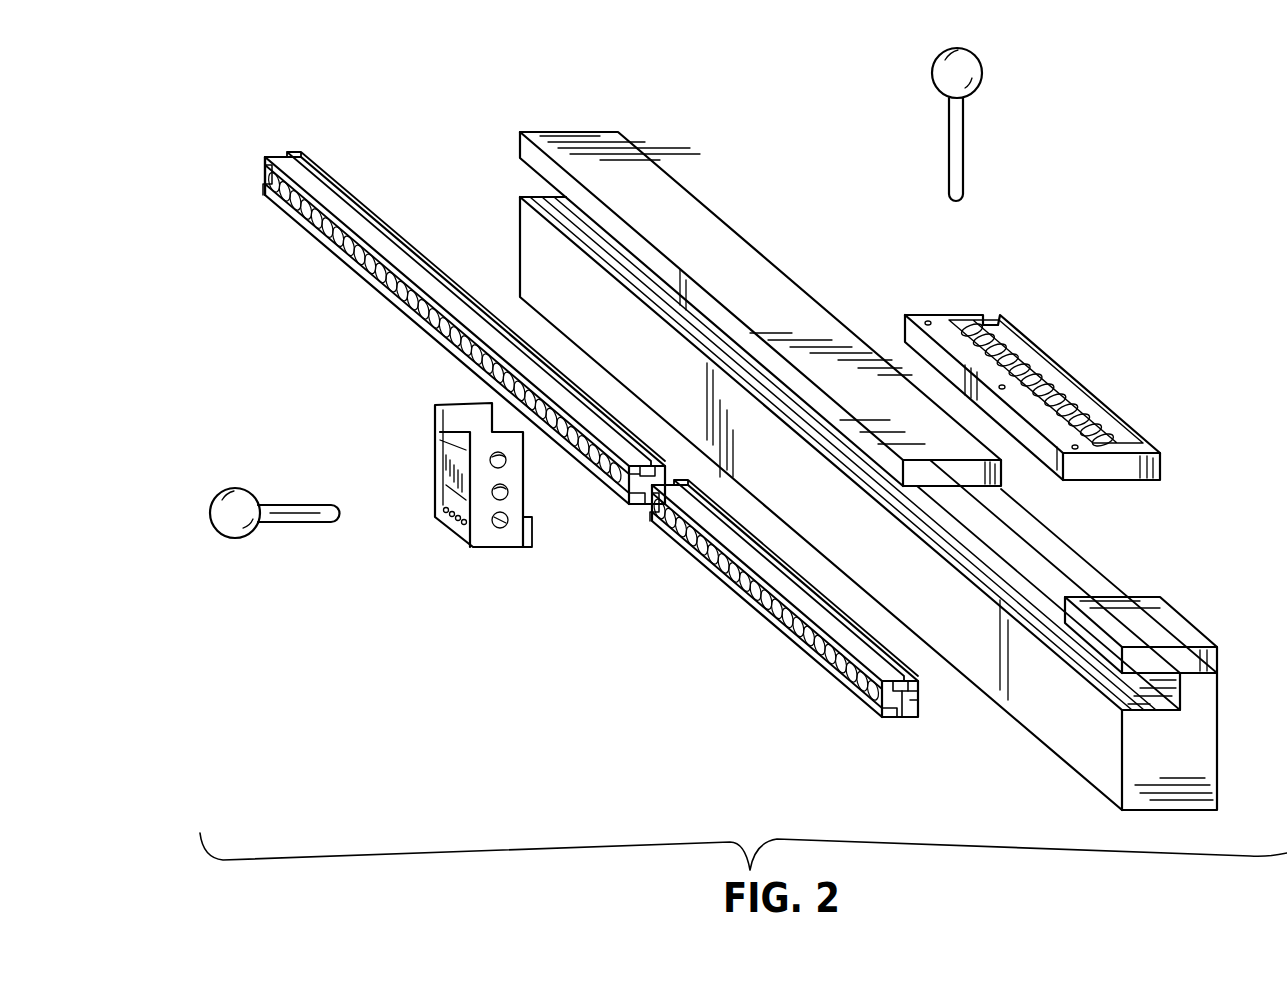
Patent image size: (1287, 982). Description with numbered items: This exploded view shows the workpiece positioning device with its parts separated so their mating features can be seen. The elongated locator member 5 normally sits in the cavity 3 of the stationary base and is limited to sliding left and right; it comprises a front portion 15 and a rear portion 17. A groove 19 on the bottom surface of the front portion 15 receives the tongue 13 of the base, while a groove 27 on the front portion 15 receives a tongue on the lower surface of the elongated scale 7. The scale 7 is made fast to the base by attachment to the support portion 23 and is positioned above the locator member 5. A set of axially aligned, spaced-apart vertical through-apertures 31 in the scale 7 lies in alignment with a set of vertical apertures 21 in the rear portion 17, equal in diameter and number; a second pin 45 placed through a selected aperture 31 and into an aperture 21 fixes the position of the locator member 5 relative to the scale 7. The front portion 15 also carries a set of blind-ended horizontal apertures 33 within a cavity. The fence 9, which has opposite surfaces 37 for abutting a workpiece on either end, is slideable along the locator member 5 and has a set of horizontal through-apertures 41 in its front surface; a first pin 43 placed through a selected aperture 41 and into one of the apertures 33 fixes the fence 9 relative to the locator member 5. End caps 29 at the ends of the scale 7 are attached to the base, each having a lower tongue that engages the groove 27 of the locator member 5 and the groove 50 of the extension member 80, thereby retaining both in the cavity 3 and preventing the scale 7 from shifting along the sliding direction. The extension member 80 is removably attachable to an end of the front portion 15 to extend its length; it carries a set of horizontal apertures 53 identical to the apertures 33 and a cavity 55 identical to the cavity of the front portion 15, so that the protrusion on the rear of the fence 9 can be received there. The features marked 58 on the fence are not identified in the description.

The cavity 3 is at (903, 503).
The locator member 5 is at (818, 640).
The scale 7 is at (1032, 362).
The fence 9 is at (482, 512).
The tongue 13 is at (1000, 585).
The front portion 15 is at (903, 700).
The rear portion 17 is at (920, 698).
The groove 19 is at (897, 713).
The vertical apertures 21 is at (747, 530).
The support portion 23 is at (1105, 583).
The groove 27 is at (870, 648).
The end caps 29 is at (632, 145).
The vertical through-apertures 31 is at (1040, 363).
The horizontal apertures 33 is at (760, 597).
The opposite surfaces 37 is at (527, 530).
The horizontal through-apertures 41 is at (440, 508).
The first pin 43 is at (305, 516).
The second pin 45 is at (965, 142).
The groove 50 is at (303, 165).
The horizontal apertures 53 is at (343, 243).
The cavity 55 is at (273, 197).
The screw holes 58 is at (513, 458).
The extension member 80 is at (424, 307).